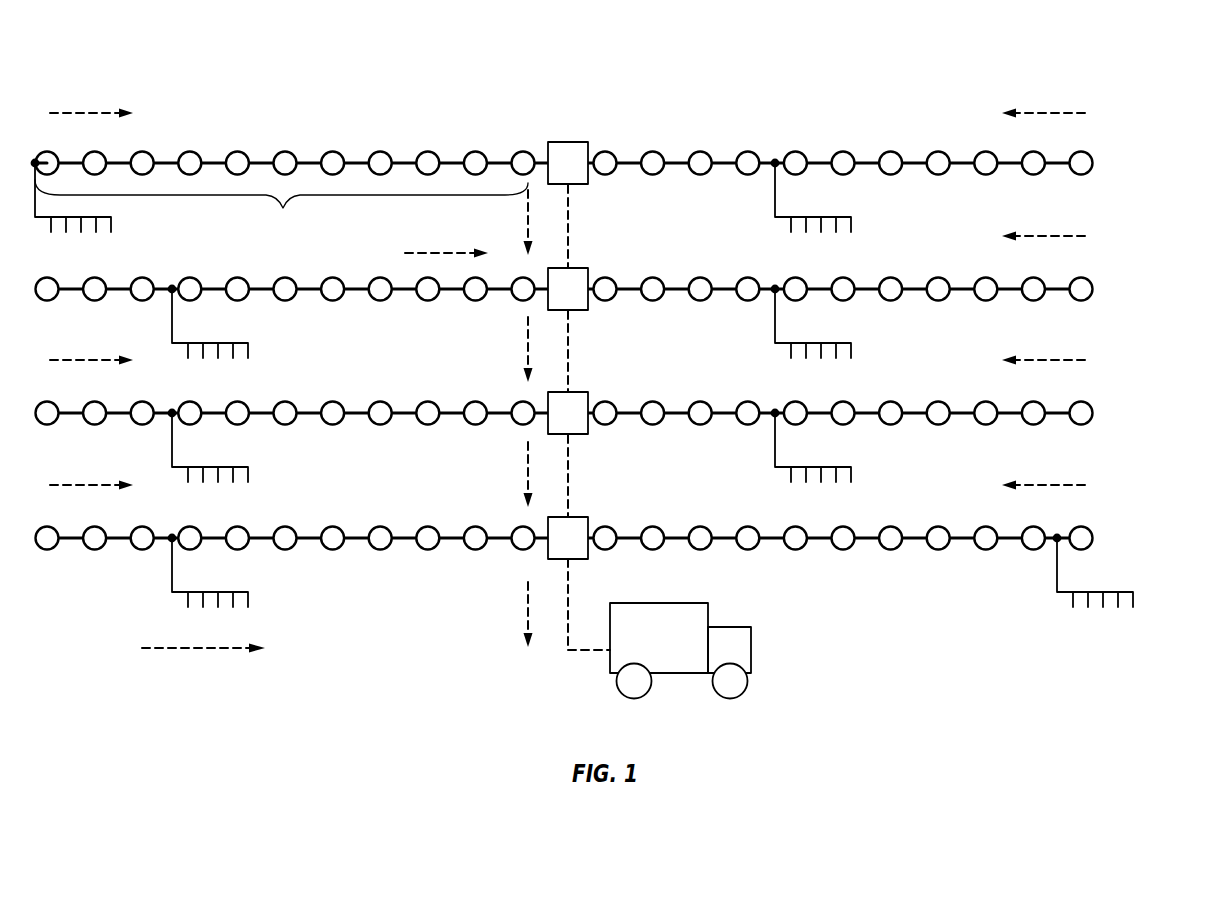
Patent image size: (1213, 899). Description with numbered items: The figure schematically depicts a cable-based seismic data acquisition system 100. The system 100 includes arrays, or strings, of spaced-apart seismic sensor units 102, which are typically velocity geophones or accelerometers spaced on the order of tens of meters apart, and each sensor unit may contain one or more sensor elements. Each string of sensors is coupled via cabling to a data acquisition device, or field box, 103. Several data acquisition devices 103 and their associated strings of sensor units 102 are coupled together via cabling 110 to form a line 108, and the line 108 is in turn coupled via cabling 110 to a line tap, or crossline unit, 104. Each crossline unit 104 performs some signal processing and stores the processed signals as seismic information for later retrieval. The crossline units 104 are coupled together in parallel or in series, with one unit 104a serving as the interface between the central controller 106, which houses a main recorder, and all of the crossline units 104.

The cable-based seismic data acquisition system 100 is at (226, 58).
The seismic sensor unit 102 is at (112, 223).
The data acquisition device 103 is at (1089, 166).
The crossline unit 104 is at (579, 143).
The interface crossline unit 104a is at (579, 516).
The central controller 106 is at (729, 627).
The line 108 is at (281, 209).
The cabling 110 is at (258, 172).